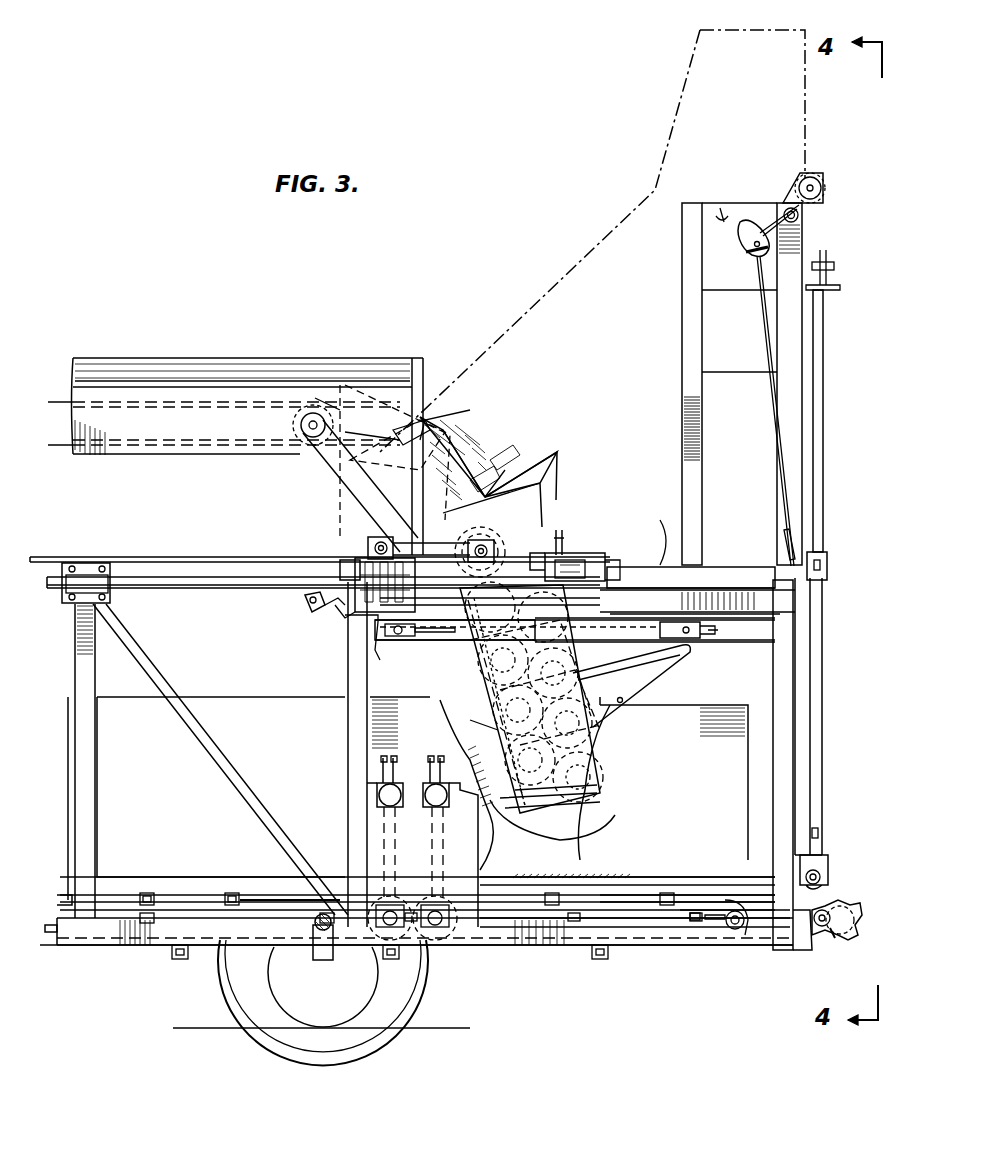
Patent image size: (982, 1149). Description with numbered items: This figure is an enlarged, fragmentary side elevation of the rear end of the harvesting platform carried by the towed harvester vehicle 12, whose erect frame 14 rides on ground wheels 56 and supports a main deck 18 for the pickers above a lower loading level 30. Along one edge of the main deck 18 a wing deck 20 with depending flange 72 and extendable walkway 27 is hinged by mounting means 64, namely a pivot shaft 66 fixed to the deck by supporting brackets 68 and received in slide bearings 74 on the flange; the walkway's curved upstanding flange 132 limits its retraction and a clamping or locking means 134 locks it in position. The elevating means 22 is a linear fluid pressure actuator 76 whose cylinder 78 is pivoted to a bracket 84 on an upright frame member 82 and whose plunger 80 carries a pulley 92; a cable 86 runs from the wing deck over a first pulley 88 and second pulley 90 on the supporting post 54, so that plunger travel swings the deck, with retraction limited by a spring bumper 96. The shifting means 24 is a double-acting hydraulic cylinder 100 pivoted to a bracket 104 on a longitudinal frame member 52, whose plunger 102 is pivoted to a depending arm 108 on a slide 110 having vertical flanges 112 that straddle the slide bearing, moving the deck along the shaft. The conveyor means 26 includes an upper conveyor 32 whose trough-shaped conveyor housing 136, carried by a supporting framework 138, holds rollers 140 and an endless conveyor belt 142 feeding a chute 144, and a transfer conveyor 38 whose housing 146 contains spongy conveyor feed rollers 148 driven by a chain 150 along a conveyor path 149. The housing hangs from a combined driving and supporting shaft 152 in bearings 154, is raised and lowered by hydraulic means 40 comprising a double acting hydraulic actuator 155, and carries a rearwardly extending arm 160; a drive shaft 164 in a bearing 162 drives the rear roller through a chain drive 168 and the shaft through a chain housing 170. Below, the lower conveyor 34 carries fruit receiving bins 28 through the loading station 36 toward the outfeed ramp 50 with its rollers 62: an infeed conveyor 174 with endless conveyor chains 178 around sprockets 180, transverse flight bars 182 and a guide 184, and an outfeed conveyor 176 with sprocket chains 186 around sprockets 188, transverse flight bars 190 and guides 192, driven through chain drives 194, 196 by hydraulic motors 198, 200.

The harvester vehicle 12 is at (695, 593).
The harvester frame 14 is at (652, 948).
The main deck 18 is at (664, 526).
The wing deck 20 is at (775, 28).
The elevating means 22 is at (830, 548).
The shifting means 24 is at (640, 575).
The conveyor means 26 is at (490, 432).
The extendable walkway 27 is at (615, 560).
The fruit receiving bin 28 is at (232, 695).
The lower loading level 30 is at (800, 780).
The upper conveyor 32 is at (210, 355).
The lower conveyor 34 is at (172, 920).
The loading station 36 is at (750, 690).
The transfer conveyor 38 is at (570, 548).
The hydraulic means 40 is at (300, 605).
The outfeed ramp 50 is at (862, 905).
The longitudinal frame member 52 is at (765, 633).
The supporting post 54 is at (681, 304).
The ground wheel 56 is at (395, 998).
The roller 62 is at (836, 938).
The mounting means 64 is at (440, 642).
The pivot shaft 66 is at (192, 590).
The supporting bracket 68 is at (98, 575).
The depending flange 72 is at (640, 596).
The slide bearing 74 is at (350, 622).
The linear fluid pressure actuator 76 is at (820, 627).
The cylinder 78 is at (812, 733).
The plunger 80 is at (823, 458).
The upright frame member 82 is at (790, 893).
The bracket 84 is at (815, 866).
The cable 86 is at (769, 340).
The first cable guide or pulley 88 is at (742, 242).
The second cable guide or pulley 90 is at (815, 189).
The cable guide or pulley 92 is at (832, 270).
The spring bumper 96 is at (799, 216).
The double-acting hydraulic cylinder 100 is at (575, 630).
The plunger 102 is at (392, 640).
The bracket 104 is at (705, 640).
The depending arm 108 is at (372, 632).
The slide 110 is at (330, 575).
The vertical flange 112 is at (358, 562).
The curved upstanding flange 132 is at (560, 570).
The clamping or locking means 134 is at (564, 545).
The conveyor housing 136 is at (145, 375).
The supporting framework 138 is at (455, 470).
The roller 140 is at (290, 415).
The endless conveyor belt 142 is at (225, 450).
The chute 144 is at (523, 385).
The housing 146 is at (595, 735).
The conveyor feed roller 148 is at (572, 665).
The conveyor path 149 is at (500, 740).
The chain 150 is at (560, 800).
The combined driving and supporting shaft 152 is at (500, 489).
The bearing 154 is at (540, 518).
The double acting hydraulic actuator 155 is at (330, 612).
The rearwardly extending arm 160 is at (655, 670).
The bearing 162 is at (395, 500).
The drive shaft 164 is at (370, 542).
The chain drive 168 is at (345, 450).
The chain housing 170 is at (431, 548).
The infeed conveyor 174 is at (195, 890).
The outfeed conveyor 176 is at (670, 900).
The endless conveyor chain 178 is at (55, 900).
The sprocket 180 is at (410, 935).
The transverse flight bar 182 is at (147, 893).
The guide 184 is at (248, 900).
The sprocket chain 186 is at (700, 910).
The sprocket 188 is at (438, 935).
The transverse flight bar 190 is at (615, 880).
The guide 192 is at (548, 920).
The chain drive 194 is at (380, 812).
The chain drive 196 is at (420, 848).
The hydraulic motor 198 is at (380, 790).
The hydraulic motor 200 is at (495, 830).